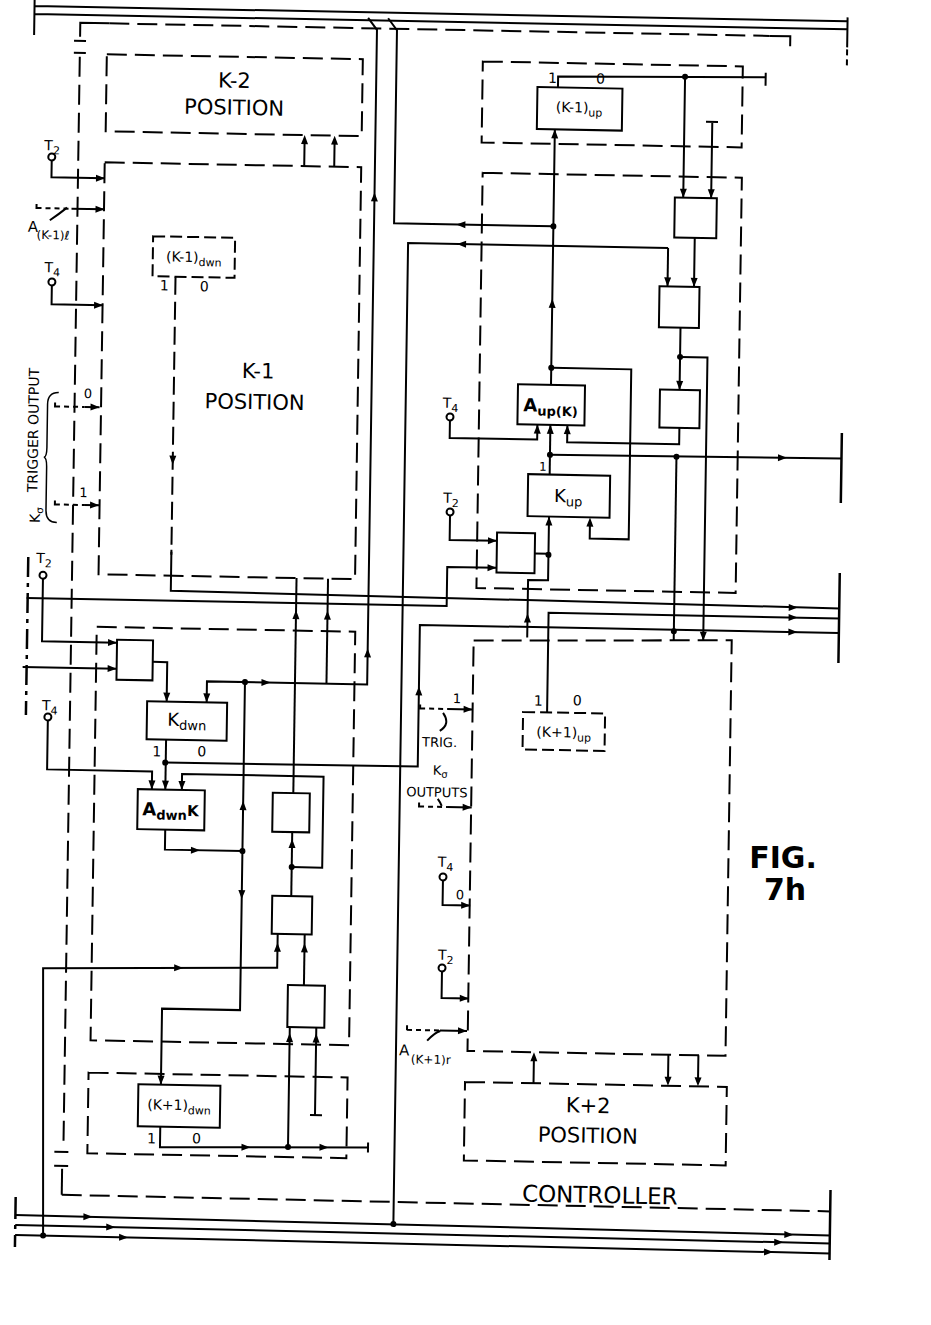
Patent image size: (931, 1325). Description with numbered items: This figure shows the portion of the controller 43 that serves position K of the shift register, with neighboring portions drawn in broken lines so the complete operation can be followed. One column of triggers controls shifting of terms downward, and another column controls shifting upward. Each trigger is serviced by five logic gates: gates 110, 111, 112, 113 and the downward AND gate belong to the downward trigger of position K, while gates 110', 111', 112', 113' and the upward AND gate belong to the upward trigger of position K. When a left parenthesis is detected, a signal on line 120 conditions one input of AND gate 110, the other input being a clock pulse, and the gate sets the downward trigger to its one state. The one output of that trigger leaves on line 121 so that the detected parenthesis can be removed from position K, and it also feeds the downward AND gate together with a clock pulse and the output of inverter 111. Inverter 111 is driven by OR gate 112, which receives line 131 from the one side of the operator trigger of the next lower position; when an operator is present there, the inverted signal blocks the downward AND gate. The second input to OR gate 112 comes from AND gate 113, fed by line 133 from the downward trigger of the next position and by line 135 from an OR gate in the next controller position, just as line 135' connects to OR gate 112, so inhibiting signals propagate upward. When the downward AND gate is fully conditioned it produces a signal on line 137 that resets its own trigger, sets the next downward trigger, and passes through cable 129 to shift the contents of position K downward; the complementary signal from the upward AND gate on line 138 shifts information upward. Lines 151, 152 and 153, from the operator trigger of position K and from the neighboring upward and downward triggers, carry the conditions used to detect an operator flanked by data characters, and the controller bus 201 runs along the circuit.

The cable 129 is at (70, 17).
The controller 43 is at (71, 82).
The line 138 is at (389, 113).
The line 137 is at (368, 182).
The carry bus line 201 is at (406, 301).
The AND gate 113' is at (678, 181).
The OR gate 112' is at (663, 287).
The inverter 111' is at (632, 384).
The AND gate 110' is at (520, 569).
The line 152 is at (173, 542).
The line 153 is at (548, 666).
The line 121 is at (251, 767).
The line 135' is at (348, 632).
The line 120 is at (62, 675).
The AND gate 110 is at (155, 667).
The inverter 111 is at (282, 721).
The OR gate 112 is at (312, 883).
The AND gate 113 is at (285, 980).
The line 131 is at (140, 974).
The line 135 is at (343, 1071).
The line 133 is at (294, 1101).
The line 151 is at (669, 1238).